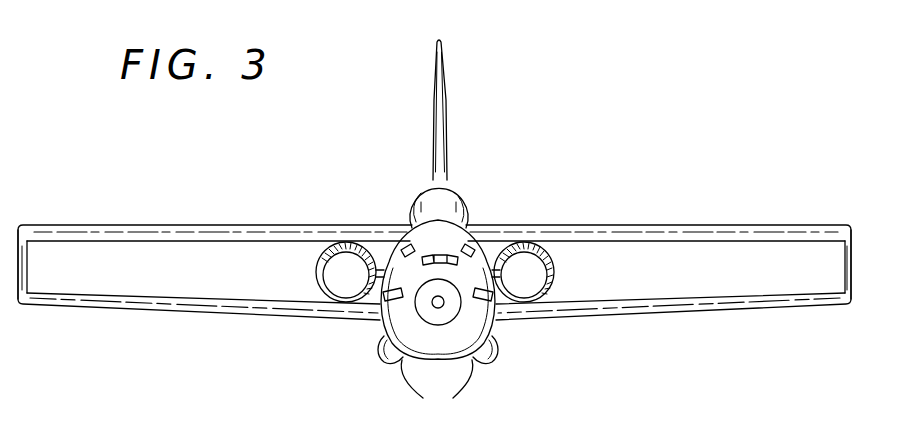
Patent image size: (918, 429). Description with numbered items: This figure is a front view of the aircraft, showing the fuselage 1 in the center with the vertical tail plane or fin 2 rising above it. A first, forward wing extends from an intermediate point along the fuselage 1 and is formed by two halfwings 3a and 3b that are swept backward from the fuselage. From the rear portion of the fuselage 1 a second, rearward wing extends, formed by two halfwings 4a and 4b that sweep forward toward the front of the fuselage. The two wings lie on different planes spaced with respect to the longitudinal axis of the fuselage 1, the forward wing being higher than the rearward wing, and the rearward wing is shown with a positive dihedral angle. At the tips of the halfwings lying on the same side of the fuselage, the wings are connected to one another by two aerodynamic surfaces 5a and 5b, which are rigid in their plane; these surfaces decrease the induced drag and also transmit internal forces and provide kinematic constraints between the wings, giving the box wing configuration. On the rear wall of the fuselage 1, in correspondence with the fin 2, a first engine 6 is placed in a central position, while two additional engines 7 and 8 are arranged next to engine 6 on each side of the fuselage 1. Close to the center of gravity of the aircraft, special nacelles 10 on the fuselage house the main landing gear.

The fuselage 1 is at (410, 222).
The vertical tail plane 2 is at (447, 105).
The halfwing 3a is at (190, 224).
The halfwing 3b is at (605, 225).
The halfwing 4a is at (148, 312).
The halfwing 4b is at (688, 312).
The aerodynamic surface 5a is at (17, 252).
The aerodynamic surface 5b is at (853, 252).
The first engine 6 is at (445, 198).
The engine 7 is at (318, 303).
The engine 8 is at (551, 303).
The nacelles 10 is at (437, 387).